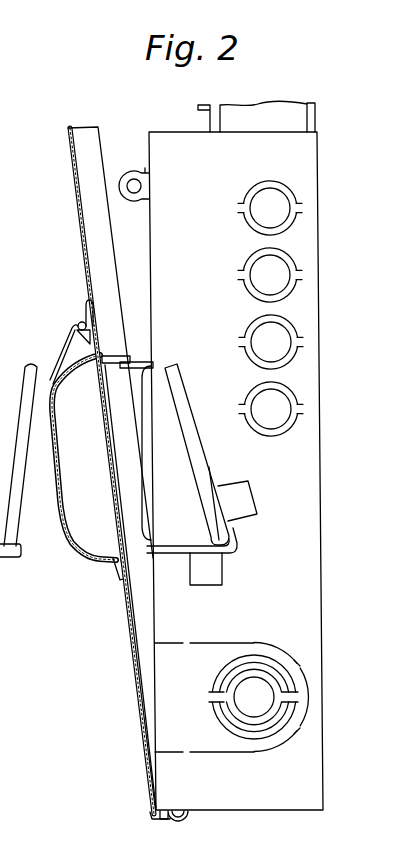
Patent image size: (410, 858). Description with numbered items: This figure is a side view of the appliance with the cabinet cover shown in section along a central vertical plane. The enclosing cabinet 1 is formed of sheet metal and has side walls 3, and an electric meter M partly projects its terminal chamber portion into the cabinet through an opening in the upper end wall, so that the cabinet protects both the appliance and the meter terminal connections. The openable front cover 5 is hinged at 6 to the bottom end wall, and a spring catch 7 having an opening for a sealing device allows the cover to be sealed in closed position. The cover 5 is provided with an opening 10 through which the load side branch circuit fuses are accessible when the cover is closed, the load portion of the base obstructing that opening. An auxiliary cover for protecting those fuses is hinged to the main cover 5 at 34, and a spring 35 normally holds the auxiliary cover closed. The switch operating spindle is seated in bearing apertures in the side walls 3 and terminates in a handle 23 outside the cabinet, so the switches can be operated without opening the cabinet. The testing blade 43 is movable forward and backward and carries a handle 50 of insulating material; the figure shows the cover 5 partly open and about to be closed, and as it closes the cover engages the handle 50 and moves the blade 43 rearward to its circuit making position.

The enclosing cabinet 1 is at (322, 463).
The side wall 3 is at (23, 396).
The front cover 5 is at (80, 241).
The hinge 6 is at (188, 823).
The spring catch 7 is at (135, 181).
The opening 10 is at (117, 508).
The handle 23 is at (183, 422).
The hinge of auxiliary cover 34 is at (78, 320).
The spring 35 is at (70, 341).
The blade 43 is at (142, 361).
The handle 50 is at (110, 356).
The electric meter M is at (254, 113).